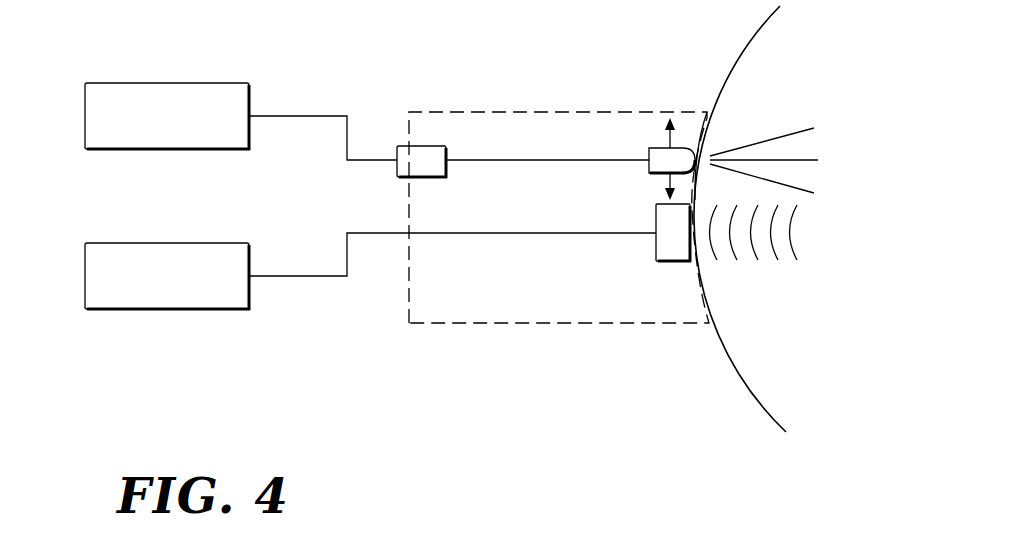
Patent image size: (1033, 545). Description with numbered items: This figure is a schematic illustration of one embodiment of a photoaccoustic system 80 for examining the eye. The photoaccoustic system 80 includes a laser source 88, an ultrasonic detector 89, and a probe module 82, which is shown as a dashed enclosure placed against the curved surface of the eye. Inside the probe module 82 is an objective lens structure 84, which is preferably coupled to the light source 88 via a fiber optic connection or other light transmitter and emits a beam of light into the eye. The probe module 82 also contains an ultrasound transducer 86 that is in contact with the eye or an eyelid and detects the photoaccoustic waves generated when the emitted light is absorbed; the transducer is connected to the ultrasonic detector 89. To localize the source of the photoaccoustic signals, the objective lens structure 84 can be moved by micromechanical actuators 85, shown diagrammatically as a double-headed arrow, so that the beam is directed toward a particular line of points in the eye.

The photoaccoustic system 80 is at (440, 68).
The probe module 82 is at (532, 110).
The objective lens structure 84 is at (690, 147).
The micromechanical actuators 85 is at (666, 138).
The ultrasound transducer 86 is at (673, 262).
The laser source 88 is at (171, 83).
The ultrasonic detector 89 is at (171, 243).